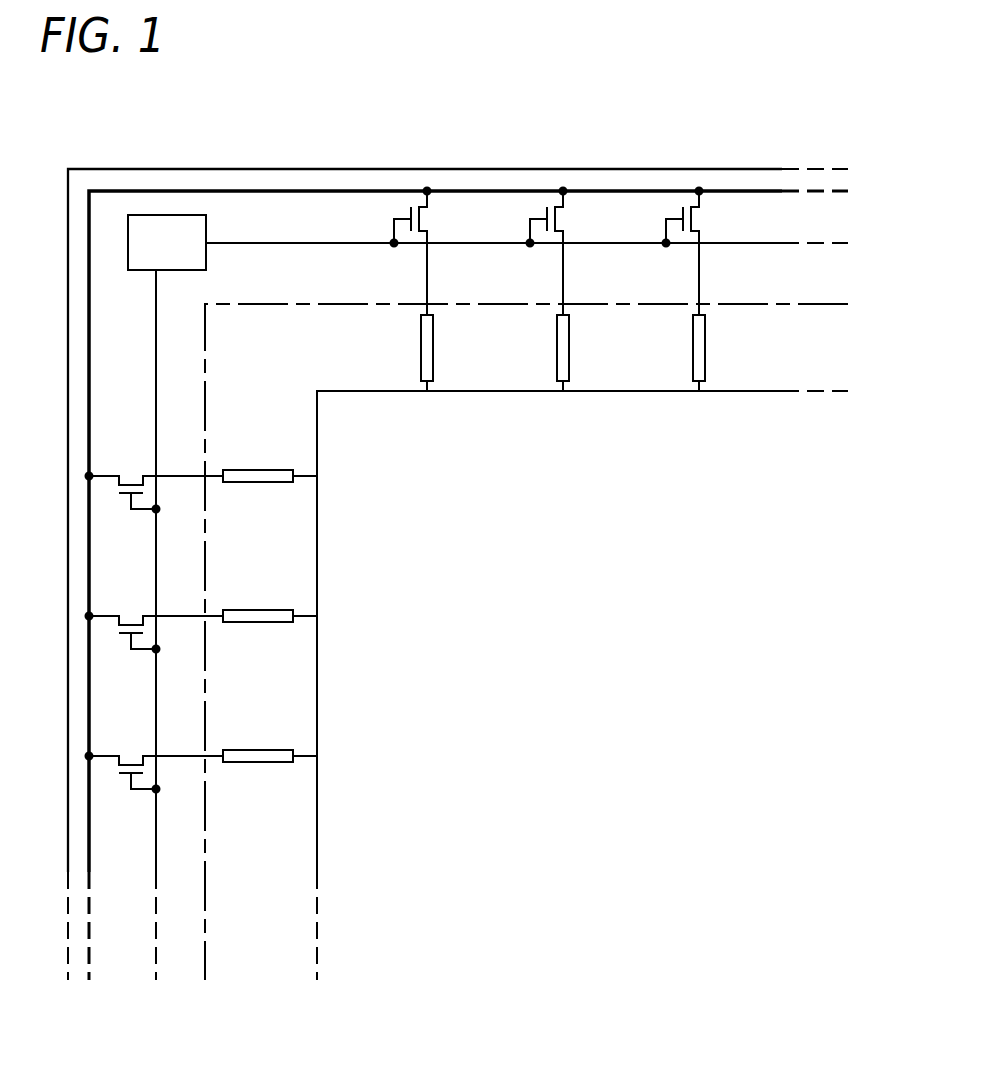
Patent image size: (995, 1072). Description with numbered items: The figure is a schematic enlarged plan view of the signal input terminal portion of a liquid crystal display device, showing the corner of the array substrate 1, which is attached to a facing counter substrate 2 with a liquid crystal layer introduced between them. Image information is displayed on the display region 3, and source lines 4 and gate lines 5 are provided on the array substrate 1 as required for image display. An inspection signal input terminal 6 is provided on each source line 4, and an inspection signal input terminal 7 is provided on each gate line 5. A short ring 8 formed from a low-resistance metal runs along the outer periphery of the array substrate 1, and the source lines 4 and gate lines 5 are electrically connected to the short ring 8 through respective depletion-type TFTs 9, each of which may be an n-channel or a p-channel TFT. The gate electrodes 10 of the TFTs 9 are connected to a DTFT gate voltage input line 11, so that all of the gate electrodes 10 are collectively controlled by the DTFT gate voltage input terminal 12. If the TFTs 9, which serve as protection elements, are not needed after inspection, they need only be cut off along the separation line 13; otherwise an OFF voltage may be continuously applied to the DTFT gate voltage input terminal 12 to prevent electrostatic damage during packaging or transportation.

The array substrate 1 is at (268, 168).
The counter substrate 2 is at (450, 393).
The display region 3 is at (722, 834).
The source line 4 is at (700, 272).
The gate line 5 is at (302, 615).
The inspection signal input terminal 6 is at (705, 350).
The inspection signal input terminal 7 is at (262, 618).
The short ring 8 is at (488, 190).
The depletion-type TFT 9 is at (699, 218).
The gate electrode 10 is at (666, 221).
The DTFT gate voltage input line 11 is at (328, 243).
The DTFT gate voltage input terminal 12 is at (162, 230).
The separation line 13 is at (630, 305).